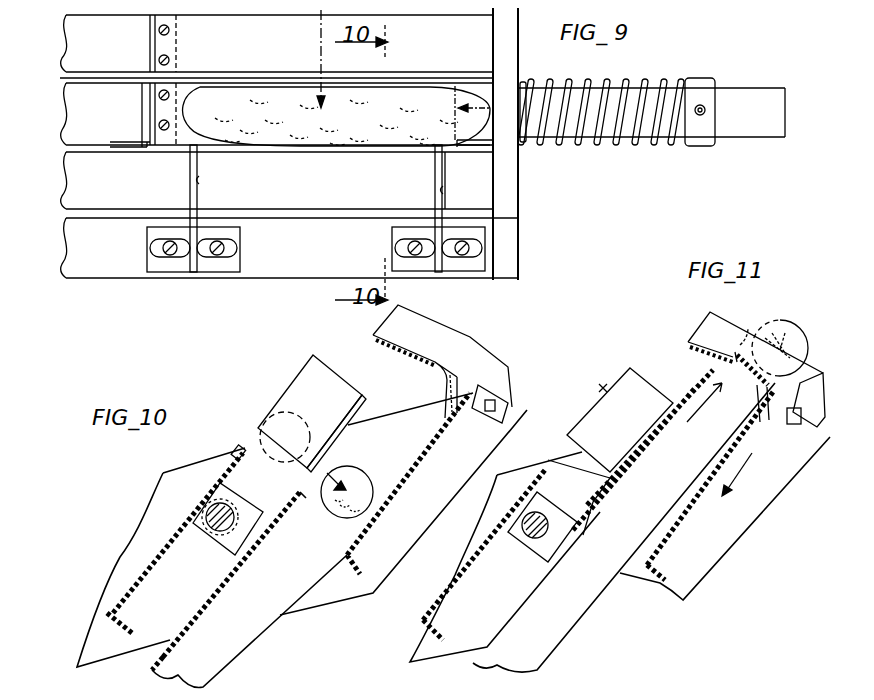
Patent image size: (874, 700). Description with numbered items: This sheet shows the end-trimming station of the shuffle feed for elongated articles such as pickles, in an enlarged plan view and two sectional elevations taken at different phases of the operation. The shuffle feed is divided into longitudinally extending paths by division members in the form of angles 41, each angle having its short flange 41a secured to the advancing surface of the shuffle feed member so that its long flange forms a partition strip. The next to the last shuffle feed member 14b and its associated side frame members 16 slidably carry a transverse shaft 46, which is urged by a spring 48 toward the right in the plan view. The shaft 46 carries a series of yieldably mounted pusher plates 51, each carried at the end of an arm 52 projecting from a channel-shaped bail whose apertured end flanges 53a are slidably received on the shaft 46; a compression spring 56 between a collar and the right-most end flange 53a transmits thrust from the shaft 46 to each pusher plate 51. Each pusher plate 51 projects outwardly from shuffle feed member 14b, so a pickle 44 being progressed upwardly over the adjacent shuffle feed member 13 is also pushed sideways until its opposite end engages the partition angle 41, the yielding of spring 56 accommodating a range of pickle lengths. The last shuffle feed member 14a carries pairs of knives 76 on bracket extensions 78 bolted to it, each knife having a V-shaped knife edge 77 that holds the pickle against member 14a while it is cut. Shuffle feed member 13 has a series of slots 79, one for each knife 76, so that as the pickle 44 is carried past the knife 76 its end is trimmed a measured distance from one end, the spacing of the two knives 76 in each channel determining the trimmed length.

In FIG. 9, the shuffle feed member 13 is at (78, 192).
In FIG. 9, the last shuffle feed member 14a is at (276, 270).
In FIG. 10, the last shuffle feed member 14a is at (430, 457).
In FIG. 11, the last shuffle feed member 14a is at (688, 524).
In FIG. 10, the next to the last shuffle feed member 14b is at (217, 480).
In FIG. 11, the next to the last shuffle feed member 14b is at (547, 462).
In FIG. 10, the side frame members 16 is at (305, 588).
In FIG. 11, the side frame members 16 is at (624, 602).
In FIG. 9, the angle 41 is at (150, 38).
In FIG. 9, the short flange 41a is at (178, 46).
In FIG. 9, the pickle 44 is at (392, 121).
In FIG. 10, the pickle 44 is at (262, 432).
In FIG. 11, the pickle 44 is at (787, 326).
In FIG. 9, the transverse shaft 46 is at (742, 95).
In FIG. 10, the transverse shaft 46 is at (213, 537).
In FIG. 11, the transverse shaft 46 is at (526, 538).
In FIG. 9, the spring 48 is at (638, 80).
In FIG. 9, the pusher plate 51 is at (142, 113).
In FIG. 10, the pusher plate 51 is at (300, 383).
In FIG. 11, the pusher plate 51 is at (600, 378).
In FIG. 10, the arm 52 is at (360, 412).
In FIG. 11, the arm 52 is at (658, 418).
In FIG. 10, the end flanges 53a is at (230, 547).
In FIG. 11, the end flanges 53a is at (538, 552).
In FIG. 10, the compression spring 56 is at (233, 492).
In FIG. 9, the knife 76 is at (190, 161).
In FIG. 10, the knife 76 is at (452, 343).
In FIG. 11, the knife 76 is at (710, 327).
In FIG. 10, the V-shaped knife edge 77 is at (433, 360).
In FIG. 11, the V-shaped knife edge 77 is at (700, 354).
In FIG. 9, the bracket extension 78 is at (162, 272).
In FIG. 10, the bracket extension 78 is at (512, 403).
In FIG. 11, the bracket extension 78 is at (806, 400).
In FIG. 9, the slot 79 is at (200, 180).
In FIG. 11, the slot 79 is at (740, 345).